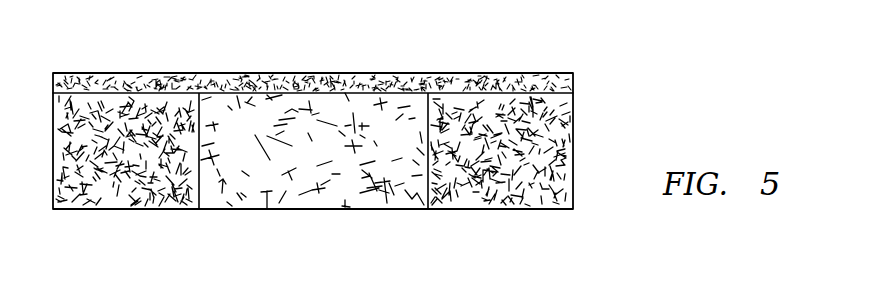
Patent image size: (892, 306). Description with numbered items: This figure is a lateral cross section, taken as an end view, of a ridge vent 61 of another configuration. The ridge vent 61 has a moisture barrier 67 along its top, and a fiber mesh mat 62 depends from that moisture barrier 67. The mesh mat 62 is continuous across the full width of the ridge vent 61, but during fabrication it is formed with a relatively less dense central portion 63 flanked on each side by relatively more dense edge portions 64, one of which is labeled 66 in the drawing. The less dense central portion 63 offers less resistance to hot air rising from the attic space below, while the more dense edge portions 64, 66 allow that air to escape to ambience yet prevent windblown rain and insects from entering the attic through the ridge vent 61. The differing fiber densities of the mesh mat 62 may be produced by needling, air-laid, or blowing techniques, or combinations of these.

The ridge vent 61 is at (638, 83).
The fiber mesh mat 62 is at (332, 232).
The relatively less dense central portion 63 is at (307, 127).
The relatively more dense edge portions 64 is at (497, 155).
The left core section 66 is at (133, 153).
The moisture barrier 67 is at (173, 85).